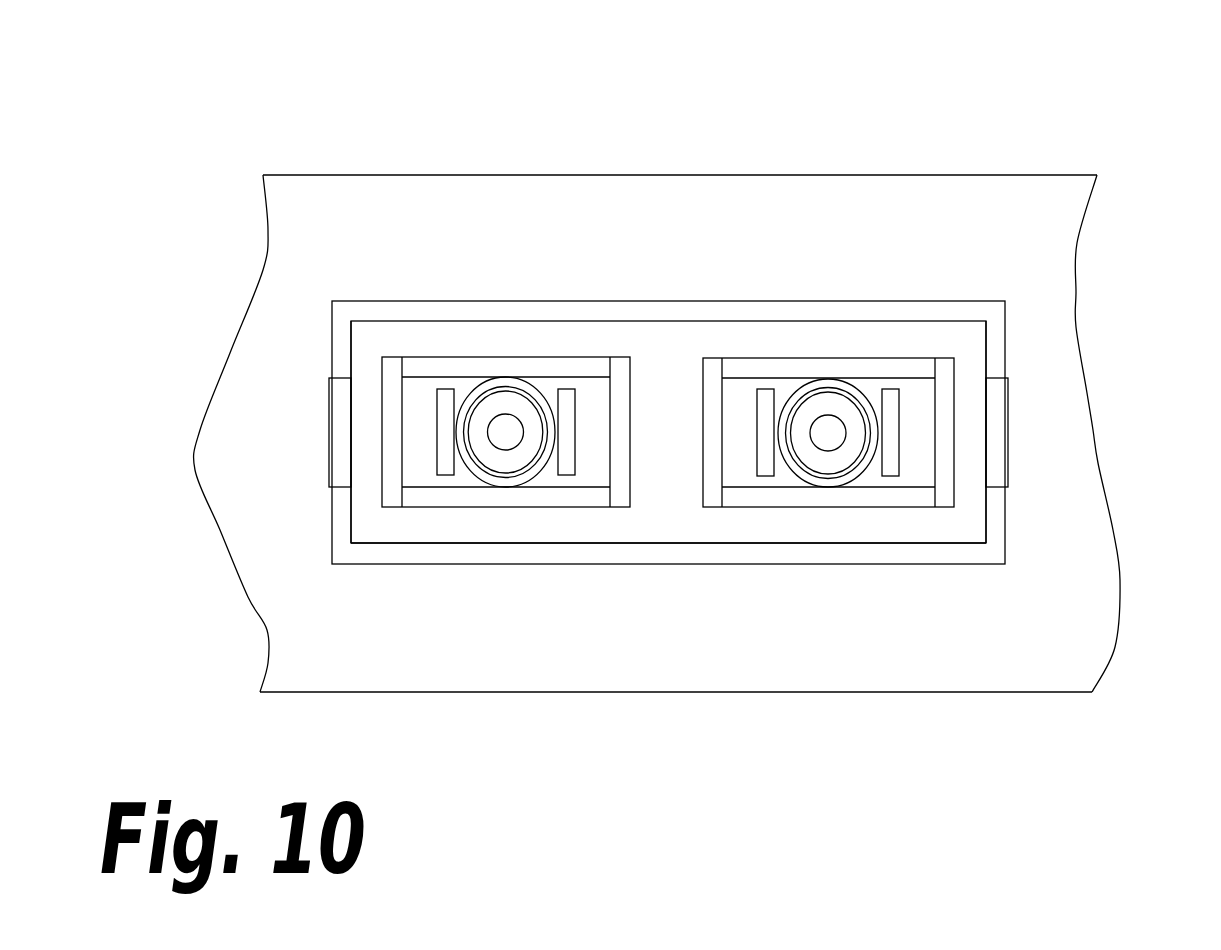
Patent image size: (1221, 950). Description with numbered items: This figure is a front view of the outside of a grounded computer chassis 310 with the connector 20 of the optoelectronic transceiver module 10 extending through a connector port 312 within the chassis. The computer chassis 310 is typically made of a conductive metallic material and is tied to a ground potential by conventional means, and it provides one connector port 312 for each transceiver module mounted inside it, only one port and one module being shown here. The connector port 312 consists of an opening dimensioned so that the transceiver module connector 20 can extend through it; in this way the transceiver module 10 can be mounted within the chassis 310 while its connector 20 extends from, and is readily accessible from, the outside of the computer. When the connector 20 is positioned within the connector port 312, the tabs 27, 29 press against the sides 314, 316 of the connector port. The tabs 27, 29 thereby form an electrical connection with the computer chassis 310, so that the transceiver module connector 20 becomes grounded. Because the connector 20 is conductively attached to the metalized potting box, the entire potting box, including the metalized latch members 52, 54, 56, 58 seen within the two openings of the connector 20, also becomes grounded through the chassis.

The optoelectronic transceiver module 10 is at (952, 566).
The connector 20 is at (514, 430).
The tab 27 is at (995, 403).
The tab 29 is at (342, 408).
The metalized latch member 52 is at (893, 397).
The metalized latch member 54 is at (763, 465).
The metalized latch member 56 is at (562, 407).
The metalized latch member 58 is at (445, 463).
The grounded computer chassis 310 is at (765, 253).
The connector port 312 is at (407, 565).
The side of connector port 314 is at (1005, 508).
The side of connector port 316 is at (332, 516).